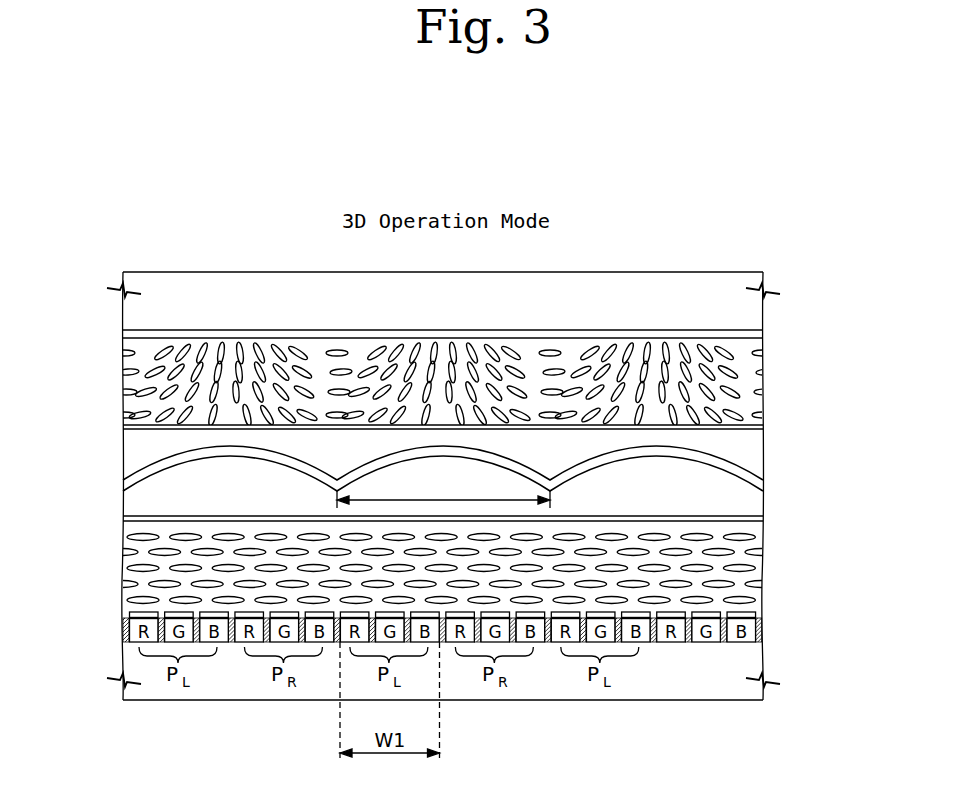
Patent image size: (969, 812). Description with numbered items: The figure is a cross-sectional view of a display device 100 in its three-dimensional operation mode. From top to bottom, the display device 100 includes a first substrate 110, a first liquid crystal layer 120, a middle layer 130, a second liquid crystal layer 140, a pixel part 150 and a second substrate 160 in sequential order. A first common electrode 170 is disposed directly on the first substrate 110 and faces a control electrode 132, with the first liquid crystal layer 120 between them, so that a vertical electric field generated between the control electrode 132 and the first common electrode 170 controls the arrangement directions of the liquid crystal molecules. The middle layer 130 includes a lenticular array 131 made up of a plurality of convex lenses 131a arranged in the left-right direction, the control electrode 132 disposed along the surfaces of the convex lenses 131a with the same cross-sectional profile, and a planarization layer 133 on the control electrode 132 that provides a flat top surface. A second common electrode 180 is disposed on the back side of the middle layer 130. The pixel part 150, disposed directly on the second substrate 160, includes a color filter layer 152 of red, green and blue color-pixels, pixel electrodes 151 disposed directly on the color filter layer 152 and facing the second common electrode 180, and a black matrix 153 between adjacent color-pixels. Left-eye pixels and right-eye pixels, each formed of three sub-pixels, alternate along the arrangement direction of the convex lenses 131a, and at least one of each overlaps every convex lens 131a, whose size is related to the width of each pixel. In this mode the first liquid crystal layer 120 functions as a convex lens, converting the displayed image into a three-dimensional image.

The display device 100 is at (791, 223).
The first substrate 110 is at (751, 309).
The first common electrode 170 is at (751, 335).
The first liquid crystal layer 120 is at (751, 383).
The middle layer 130 is at (468, 475).
The planarization layer 133 is at (751, 446).
The control electrode 132 is at (751, 472).
The lenticular array 131 is at (751, 500).
The convex lens 131a is at (231, 456).
The second common electrode 180 is at (751, 521).
The second liquid crystal layer 140 is at (751, 576).
The pixel part 150 is at (509, 634).
The pixel electrode 151 is at (748, 616).
The black matrix 153 is at (762, 631).
The color filter layer 152 is at (688, 643).
The second substrate 160 is at (664, 688).